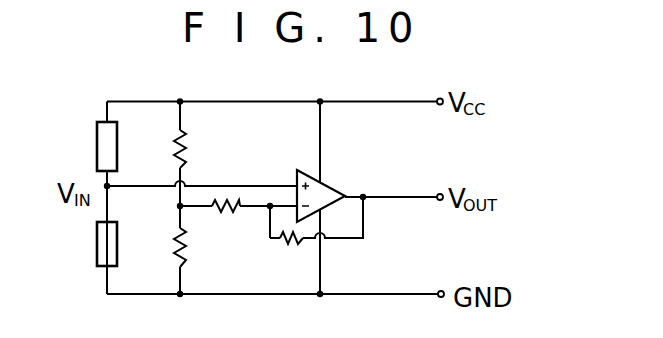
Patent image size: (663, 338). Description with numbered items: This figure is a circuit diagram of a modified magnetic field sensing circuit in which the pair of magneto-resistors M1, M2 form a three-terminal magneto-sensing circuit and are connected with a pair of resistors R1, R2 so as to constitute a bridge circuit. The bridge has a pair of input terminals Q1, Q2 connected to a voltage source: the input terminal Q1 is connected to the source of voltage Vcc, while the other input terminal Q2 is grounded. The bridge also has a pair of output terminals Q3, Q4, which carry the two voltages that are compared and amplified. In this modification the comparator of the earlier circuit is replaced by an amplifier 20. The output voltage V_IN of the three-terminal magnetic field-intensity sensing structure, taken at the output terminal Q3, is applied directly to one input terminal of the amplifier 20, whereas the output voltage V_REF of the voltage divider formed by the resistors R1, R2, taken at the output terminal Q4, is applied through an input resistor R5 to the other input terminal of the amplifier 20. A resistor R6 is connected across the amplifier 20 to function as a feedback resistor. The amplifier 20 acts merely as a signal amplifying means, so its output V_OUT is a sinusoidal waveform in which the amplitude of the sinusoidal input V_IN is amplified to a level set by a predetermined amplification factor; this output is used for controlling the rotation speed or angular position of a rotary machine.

The amplifier 20 is at (330, 180).
The input terminal Q1 is at (181, 101).
The input terminal Q2 is at (181, 295).
The output terminal Q3 is at (123, 202).
The output terminal Q4 is at (181, 207).
The resistor R1 is at (176, 150).
The resistor R2 is at (176, 245).
The input resistor R5 is at (228, 208).
The feedback resistor R6 is at (294, 240).
The magneto-resistor M1 is at (97, 148).
The magneto-resistor M2 is at (97, 250).